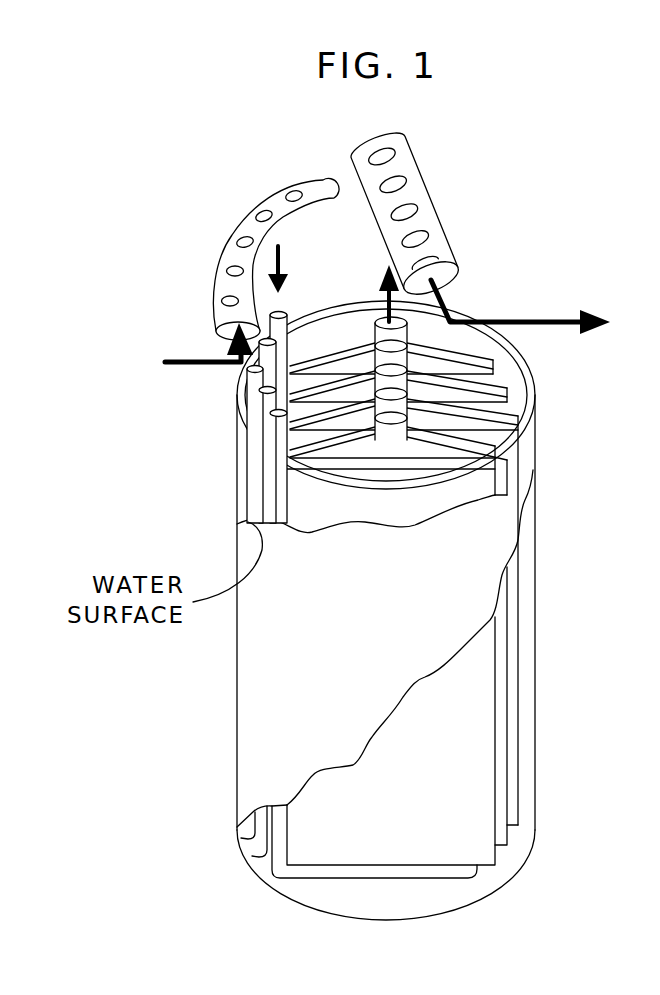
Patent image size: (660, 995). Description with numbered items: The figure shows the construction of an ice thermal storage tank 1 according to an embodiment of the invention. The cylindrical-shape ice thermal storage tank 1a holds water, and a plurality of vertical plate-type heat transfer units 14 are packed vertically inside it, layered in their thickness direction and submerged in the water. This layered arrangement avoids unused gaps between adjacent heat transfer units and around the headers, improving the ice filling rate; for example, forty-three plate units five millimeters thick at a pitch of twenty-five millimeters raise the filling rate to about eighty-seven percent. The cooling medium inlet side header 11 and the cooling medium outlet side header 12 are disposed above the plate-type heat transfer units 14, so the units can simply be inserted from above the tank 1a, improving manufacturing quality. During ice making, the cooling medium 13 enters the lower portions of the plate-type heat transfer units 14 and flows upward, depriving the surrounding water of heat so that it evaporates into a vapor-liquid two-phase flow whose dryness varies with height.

The ice thermal storage tank 1 is at (250, 703).
The cylindrical-shape ice thermal storage tank 1a is at (493, 532).
The cooling medium inlet side header 11 is at (233, 252).
The cooling medium outlet side header 12 is at (415, 188).
The cooling medium 13 is at (376, 304).
The plate-type heat transfer units 14 is at (478, 737).